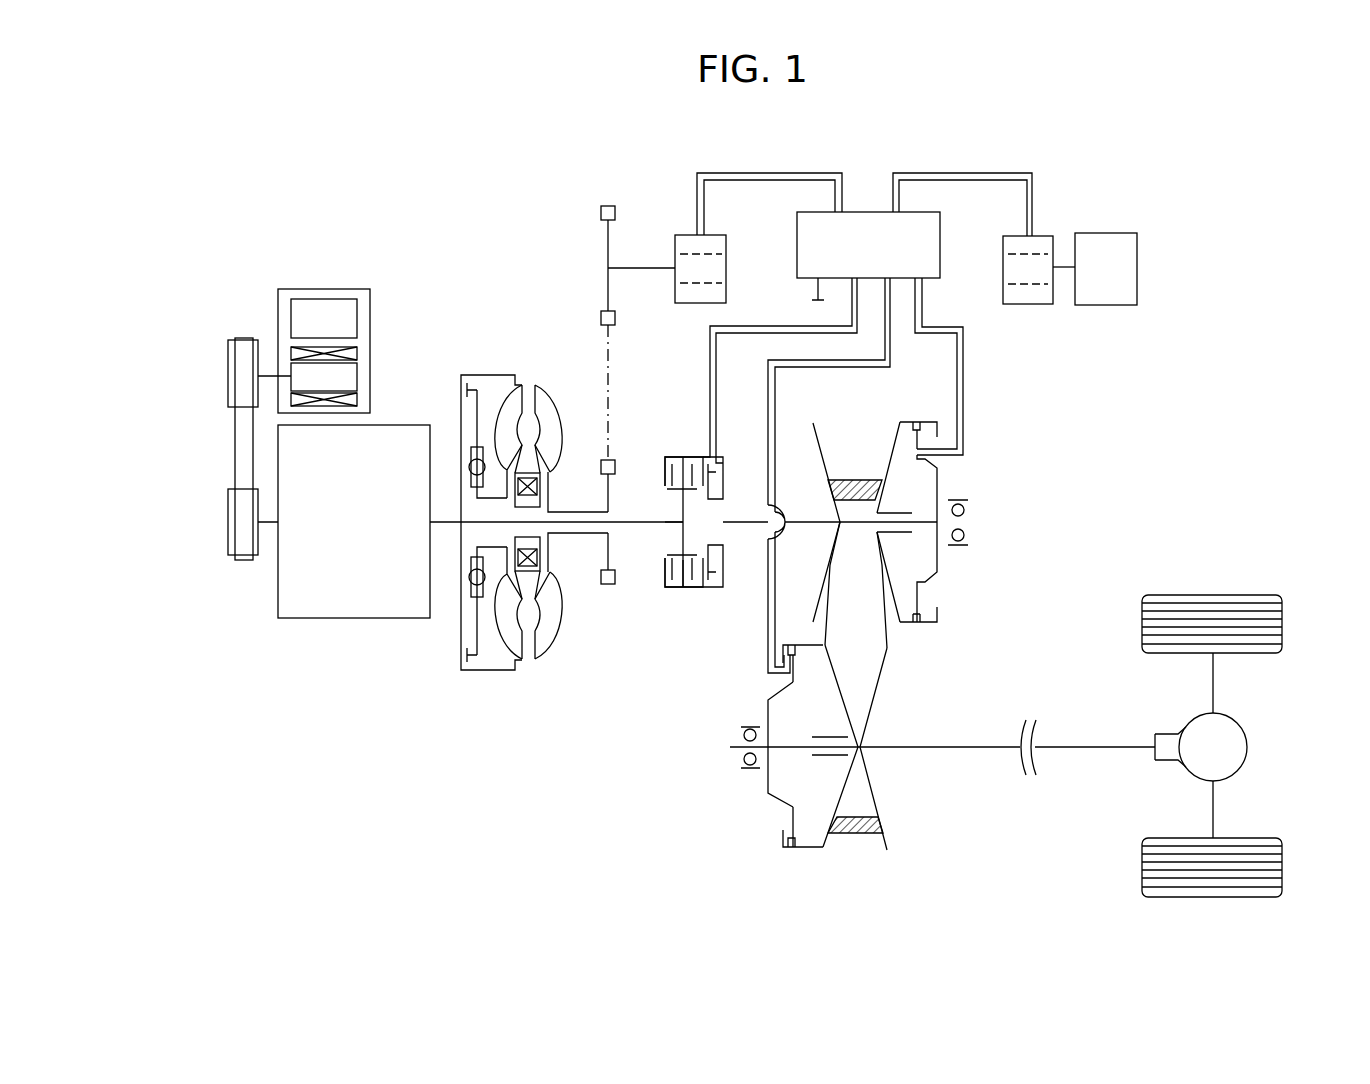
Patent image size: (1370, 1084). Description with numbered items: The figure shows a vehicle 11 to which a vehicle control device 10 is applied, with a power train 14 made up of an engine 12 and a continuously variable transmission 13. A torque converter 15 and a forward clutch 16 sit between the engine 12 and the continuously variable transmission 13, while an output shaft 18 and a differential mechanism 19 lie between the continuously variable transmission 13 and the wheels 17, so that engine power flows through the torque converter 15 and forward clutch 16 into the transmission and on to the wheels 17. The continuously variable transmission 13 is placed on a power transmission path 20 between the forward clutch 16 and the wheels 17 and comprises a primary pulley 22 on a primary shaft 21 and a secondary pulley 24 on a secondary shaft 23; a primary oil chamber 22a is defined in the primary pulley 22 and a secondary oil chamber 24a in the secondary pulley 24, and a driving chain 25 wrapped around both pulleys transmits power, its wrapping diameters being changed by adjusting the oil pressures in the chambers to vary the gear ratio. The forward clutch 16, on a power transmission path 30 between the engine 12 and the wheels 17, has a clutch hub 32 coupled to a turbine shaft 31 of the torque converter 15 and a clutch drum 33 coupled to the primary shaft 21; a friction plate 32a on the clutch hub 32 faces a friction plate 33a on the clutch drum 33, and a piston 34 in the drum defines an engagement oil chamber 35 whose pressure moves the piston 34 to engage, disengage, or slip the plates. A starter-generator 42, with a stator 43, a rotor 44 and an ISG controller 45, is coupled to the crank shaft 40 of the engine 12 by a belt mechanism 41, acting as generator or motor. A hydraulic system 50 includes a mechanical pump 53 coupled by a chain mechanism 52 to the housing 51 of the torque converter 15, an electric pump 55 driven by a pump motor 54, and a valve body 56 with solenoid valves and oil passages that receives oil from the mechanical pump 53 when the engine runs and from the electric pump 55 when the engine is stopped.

The vehicle control device 10 is at (312, 170).
The vehicle 11 is at (292, 123).
The engine 12 is at (318, 618).
The continuously variable transmission 13 is at (852, 863).
The power train 14 is at (247, 632).
The torque converter 15 is at (479, 368).
The forward clutch 16 is at (666, 452).
The wheels 17 is at (1283, 628).
The output shaft 18 is at (1090, 745).
The differential mechanism 19 is at (1249, 747).
The power transmission path 20 is at (948, 766).
The primary shaft 21 is at (811, 526).
The primary pulley 22 is at (943, 477).
The primary oil chamber 22a is at (925, 563).
The secondary shaft 23 is at (906, 745).
The secondary pulley 24 is at (772, 840).
The secondary oil chamber 24a is at (773, 780).
The driving chain 25 is at (857, 478).
The power transmission path 30 is at (648, 543).
The turbine shaft 31 is at (585, 510).
The clutch hub 32 is at (680, 507).
The friction plate 32a is at (695, 585).
The clutch drum 33 is at (683, 455).
The friction plate 33a is at (683, 590).
The piston 34 is at (723, 565).
The engagement oil chamber 35 is at (722, 470).
The crank shaft 40 is at (265, 520).
The belt mechanism 41 is at (229, 330).
The starter-generator 42 is at (297, 283).
The stator 43 is at (357, 353).
The rotor 44 is at (357, 375).
The ISG controller 45 is at (335, 299).
The hydraulic system 50 is at (1150, 170).
The housing 51 is at (541, 384).
The chain mechanism 52 is at (602, 238).
The mechanical pump 53 is at (683, 235).
The pump motor 54 is at (1137, 265).
The electric pump 55 is at (1045, 235).
The valve body 56 is at (941, 225).